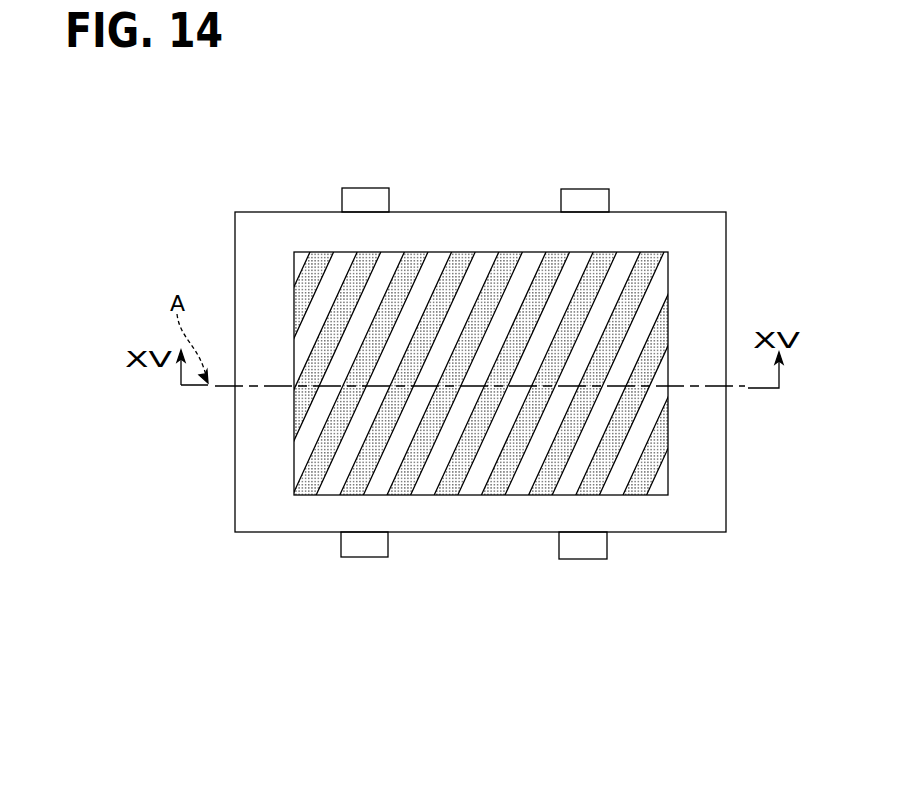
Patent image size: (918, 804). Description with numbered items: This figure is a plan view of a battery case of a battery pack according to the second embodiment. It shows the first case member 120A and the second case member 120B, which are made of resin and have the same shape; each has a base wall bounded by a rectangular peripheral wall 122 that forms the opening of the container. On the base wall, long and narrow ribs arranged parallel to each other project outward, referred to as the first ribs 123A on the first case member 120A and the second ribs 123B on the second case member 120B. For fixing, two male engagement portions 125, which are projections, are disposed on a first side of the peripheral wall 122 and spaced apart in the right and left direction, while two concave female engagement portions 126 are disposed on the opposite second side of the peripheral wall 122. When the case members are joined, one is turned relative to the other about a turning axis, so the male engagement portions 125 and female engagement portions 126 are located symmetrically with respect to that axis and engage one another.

The first case member 120A is at (473, 359).
The second case member 120B is at (473, 359).
The peripheral wall 122 is at (298, 207).
The first ribs 123A is at (478, 309).
The second ribs 123B is at (444, 268).
The male engagement portion 125 is at (364, 188).
The female engagement portion 126 is at (363, 557).